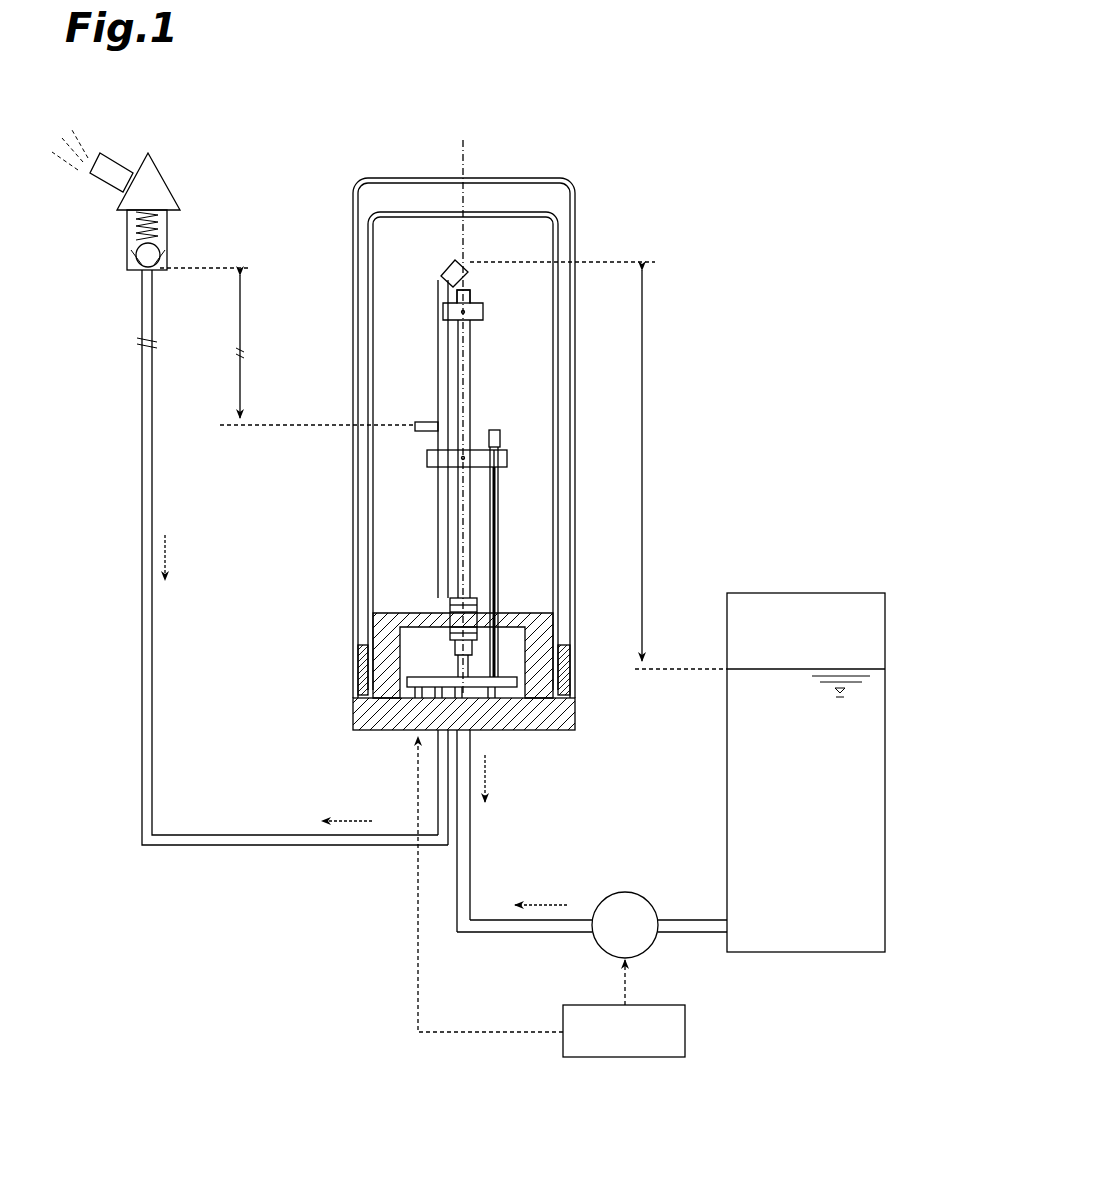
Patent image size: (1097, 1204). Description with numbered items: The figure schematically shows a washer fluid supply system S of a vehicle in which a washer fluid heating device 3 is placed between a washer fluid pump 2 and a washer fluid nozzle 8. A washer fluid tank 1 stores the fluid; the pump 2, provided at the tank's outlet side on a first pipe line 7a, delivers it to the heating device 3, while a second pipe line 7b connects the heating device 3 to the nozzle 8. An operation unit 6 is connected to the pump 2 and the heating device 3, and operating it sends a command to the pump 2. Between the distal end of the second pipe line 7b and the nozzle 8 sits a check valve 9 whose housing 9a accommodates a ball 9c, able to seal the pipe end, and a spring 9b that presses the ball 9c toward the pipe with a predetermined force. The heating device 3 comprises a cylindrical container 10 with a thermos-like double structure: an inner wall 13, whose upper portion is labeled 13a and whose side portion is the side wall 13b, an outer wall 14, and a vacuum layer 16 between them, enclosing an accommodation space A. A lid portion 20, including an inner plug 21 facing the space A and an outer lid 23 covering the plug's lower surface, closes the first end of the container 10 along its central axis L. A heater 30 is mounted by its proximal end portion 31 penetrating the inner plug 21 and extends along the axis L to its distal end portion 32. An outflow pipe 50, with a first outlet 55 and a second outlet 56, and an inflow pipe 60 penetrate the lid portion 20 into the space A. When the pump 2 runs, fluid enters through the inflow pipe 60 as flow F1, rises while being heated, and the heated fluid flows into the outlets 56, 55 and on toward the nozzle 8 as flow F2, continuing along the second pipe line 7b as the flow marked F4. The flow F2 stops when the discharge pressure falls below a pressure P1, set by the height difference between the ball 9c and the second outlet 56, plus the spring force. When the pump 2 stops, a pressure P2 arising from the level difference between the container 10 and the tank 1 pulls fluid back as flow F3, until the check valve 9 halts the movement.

The washer fluid tank 1 is at (727, 782).
The washer fluid pump 2 is at (625, 892).
The washer fluid heating device 3 is at (585, 150).
The operation unit 6 is at (688, 1030).
The first pipe line 7a is at (672, 918).
The second pipe line 7b is at (140, 668).
The washer fluid nozzle 8 is at (168, 168).
The check valve 9 is at (191, 233).
The housing 9a is at (165, 239).
The spring 9b is at (150, 225).
The ball 9c is at (152, 262).
The container 10 is at (580, 222).
The inner wall 13 is at (364, 490).
The top wall of container 13a is at (418, 215).
The side wall 13b is at (370, 452).
The outer wall 14 is at (355, 548).
The vacuum layer 16 is at (360, 283).
The lid portion 20 is at (578, 722).
The inner plug 21 is at (370, 655).
The outer lid 23 is at (360, 712).
The heater 30 is at (475, 352).
The proximal end portion 31 is at (470, 562).
The distal end portion 32 is at (468, 294).
The outflow pipe 50 is at (436, 315).
The first outlet 55 is at (462, 262).
The second outlet 56 is at (418, 422).
The inflow pipe 60 is at (472, 742).
The central axis L is at (468, 152).
The accommodation space A is at (515, 402).
The washer fluid supply system S is at (742, 110).
The pressure P1 is at (245, 332).
The pressure P2 is at (598, 465).
The flow F1 is at (545, 905).
The flow F2 is at (355, 821).
The flow F3 is at (488, 778).
The flow F4 is at (168, 556).